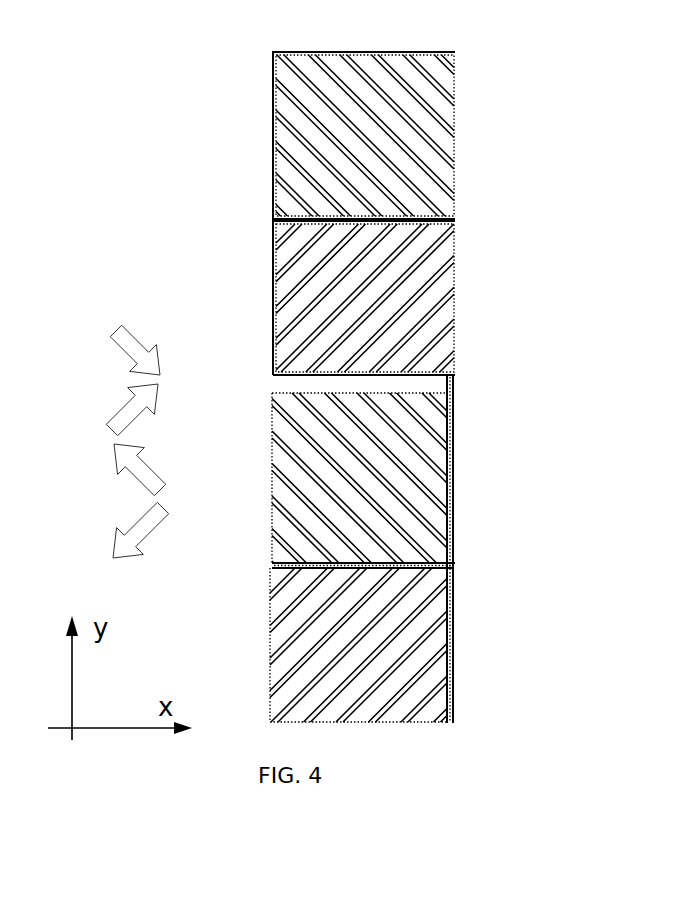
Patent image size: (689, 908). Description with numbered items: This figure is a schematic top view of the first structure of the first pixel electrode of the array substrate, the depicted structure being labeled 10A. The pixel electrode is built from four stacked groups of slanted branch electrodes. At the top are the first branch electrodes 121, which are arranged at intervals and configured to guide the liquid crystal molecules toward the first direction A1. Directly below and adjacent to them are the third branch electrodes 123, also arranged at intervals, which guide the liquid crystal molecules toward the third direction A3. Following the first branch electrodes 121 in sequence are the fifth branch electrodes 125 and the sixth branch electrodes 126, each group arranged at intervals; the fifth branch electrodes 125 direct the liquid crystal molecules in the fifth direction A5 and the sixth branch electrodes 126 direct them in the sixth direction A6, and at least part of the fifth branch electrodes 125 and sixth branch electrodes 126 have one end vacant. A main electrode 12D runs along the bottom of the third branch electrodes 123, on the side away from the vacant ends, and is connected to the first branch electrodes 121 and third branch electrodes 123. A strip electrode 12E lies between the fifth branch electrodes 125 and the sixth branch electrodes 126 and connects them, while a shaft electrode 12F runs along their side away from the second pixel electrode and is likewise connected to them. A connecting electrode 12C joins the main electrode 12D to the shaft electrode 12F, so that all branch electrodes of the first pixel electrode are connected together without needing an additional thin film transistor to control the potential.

The display device / pixel structure 10A is at (178, 38).
The first branch electrodes 121 is at (443, 116).
The third branch electrodes 123 is at (440, 300).
The fifth branch electrodes 125 is at (443, 438).
The sixth branch electrodes 126 is at (440, 655).
The connecting electrode 12C is at (452, 388).
The main electrode 12D is at (450, 374).
The strip electrode 12E is at (445, 562).
The shaft electrode 12F is at (452, 598).
The first direction A1 is at (108, 352).
The third direction A3 is at (107, 410).
The fifth direction A5 is at (111, 470).
The sixth direction A6 is at (113, 530).